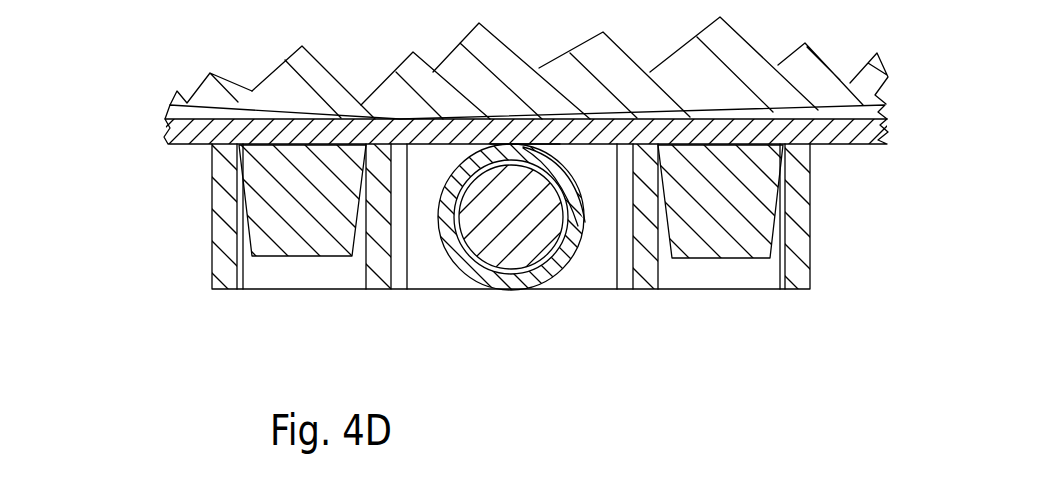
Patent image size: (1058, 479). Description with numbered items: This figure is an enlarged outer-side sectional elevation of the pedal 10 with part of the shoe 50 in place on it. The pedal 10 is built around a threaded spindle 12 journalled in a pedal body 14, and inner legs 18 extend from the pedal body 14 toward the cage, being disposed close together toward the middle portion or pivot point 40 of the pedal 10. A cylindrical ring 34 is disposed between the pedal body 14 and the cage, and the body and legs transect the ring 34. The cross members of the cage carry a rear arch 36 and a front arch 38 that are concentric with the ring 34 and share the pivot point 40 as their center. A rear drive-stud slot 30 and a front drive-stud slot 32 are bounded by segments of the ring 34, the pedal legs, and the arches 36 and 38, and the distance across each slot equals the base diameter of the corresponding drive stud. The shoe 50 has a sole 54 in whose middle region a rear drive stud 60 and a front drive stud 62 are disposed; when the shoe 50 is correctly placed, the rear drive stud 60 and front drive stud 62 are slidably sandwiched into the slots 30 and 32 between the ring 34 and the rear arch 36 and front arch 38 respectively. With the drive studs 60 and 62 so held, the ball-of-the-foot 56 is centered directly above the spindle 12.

The pedal 10 is at (504, 274).
The threaded spindle 12 is at (518, 213).
The pedal body 14 is at (540, 233).
The inner legs 18 is at (428, 243).
The rear drive-stud slot 30 is at (315, 150).
The front drive-stud slot 32 is at (722, 152).
The cylindrical ring 34 is at (375, 258).
The rear arch 36 is at (223, 198).
The front arch 38 is at (798, 205).
The pivot point 40 is at (520, 145).
The shoe 50 is at (478, 68).
The sole 54 is at (192, 137).
The ball-of-the-foot 56 is at (510, 103).
The rear drive stud 60 is at (305, 195).
The front drive stud 62 is at (727, 198).